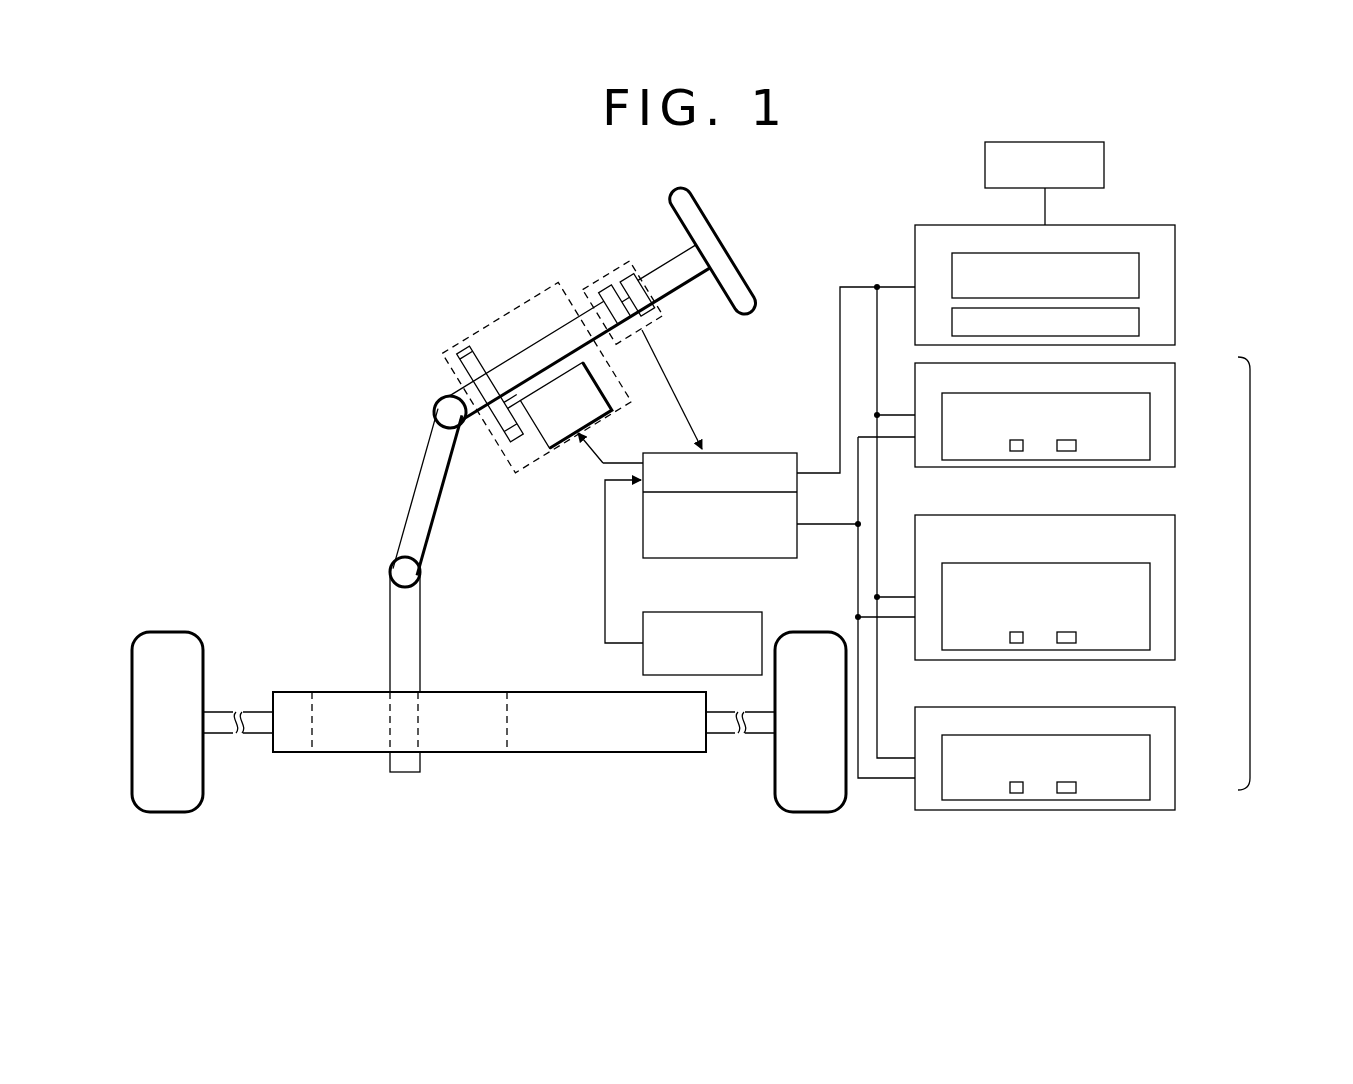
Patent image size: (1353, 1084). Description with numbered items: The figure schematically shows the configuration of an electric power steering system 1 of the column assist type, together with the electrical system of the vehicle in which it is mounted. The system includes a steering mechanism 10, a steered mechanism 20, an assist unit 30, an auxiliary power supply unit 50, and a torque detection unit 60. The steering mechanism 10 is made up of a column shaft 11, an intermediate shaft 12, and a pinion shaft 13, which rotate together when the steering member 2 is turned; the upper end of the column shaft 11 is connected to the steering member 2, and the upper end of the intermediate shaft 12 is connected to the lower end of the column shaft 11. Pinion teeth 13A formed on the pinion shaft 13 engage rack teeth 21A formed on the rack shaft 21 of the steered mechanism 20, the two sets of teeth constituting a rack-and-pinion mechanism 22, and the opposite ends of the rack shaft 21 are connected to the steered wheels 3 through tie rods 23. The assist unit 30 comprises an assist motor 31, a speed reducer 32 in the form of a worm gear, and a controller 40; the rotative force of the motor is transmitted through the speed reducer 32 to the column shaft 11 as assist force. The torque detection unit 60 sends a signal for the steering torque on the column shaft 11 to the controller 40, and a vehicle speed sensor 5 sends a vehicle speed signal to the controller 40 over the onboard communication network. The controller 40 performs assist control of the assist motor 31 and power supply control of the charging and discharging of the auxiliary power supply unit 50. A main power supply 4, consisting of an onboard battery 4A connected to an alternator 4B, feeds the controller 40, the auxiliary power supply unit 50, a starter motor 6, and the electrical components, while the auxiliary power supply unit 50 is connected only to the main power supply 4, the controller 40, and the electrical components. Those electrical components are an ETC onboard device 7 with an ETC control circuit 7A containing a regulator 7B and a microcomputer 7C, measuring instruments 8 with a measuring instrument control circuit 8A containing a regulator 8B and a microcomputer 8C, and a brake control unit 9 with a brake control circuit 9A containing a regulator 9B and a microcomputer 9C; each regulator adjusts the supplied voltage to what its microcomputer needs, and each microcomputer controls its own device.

The electric power steering system 1 is at (410, 262).
The steering member 2 is at (713, 251).
The steered wheels 3 is at (163, 813).
The main power supply 4 is at (1175, 238).
The onboard battery 4A is at (1139, 272).
The alternator 4B is at (1139, 320).
The vehicle speed sensor 5 is at (703, 609).
The starter motor 6 is at (1104, 163).
The ETC onboard device 7 is at (1175, 375).
The ETC control circuit 7A is at (1150, 425).
The regulator 7B is at (1016, 451).
The microcomputer 7C is at (1067, 451).
The measuring instruments 8 is at (1175, 547).
The measuring instrument control circuit 8A is at (1150, 605).
The regulator 8B is at (1016, 650).
The microcomputer 8C is at (1067, 650).
The brake control unit 9 is at (1175, 718).
The brake control circuit 9A is at (1150, 765).
The regulator 9B is at (1016, 800).
The microcomputer 9C is at (1067, 800).
The steering mechanism 10 is at (387, 399).
The column shaft 11 is at (637, 295).
The intermediate shaft 12 is at (417, 488).
The pinion shaft 13 is at (392, 638).
The pinion teeth 13A is at (400, 742).
The steered mechanism 20 is at (299, 659).
The rack shaft 21 is at (513, 690).
The rack teeth 21A is at (458, 742).
The rack-and-pinion mechanism 22 is at (375, 812).
The tie rods 23 is at (253, 727).
The assist unit 30 is at (536, 377).
The assist motor 31 is at (558, 406).
The speed reducer 32 is at (490, 394).
The controller 40 is at (746, 452).
The auxiliary power supply unit 50 is at (760, 558).
The torque detection unit 60 is at (623, 302).